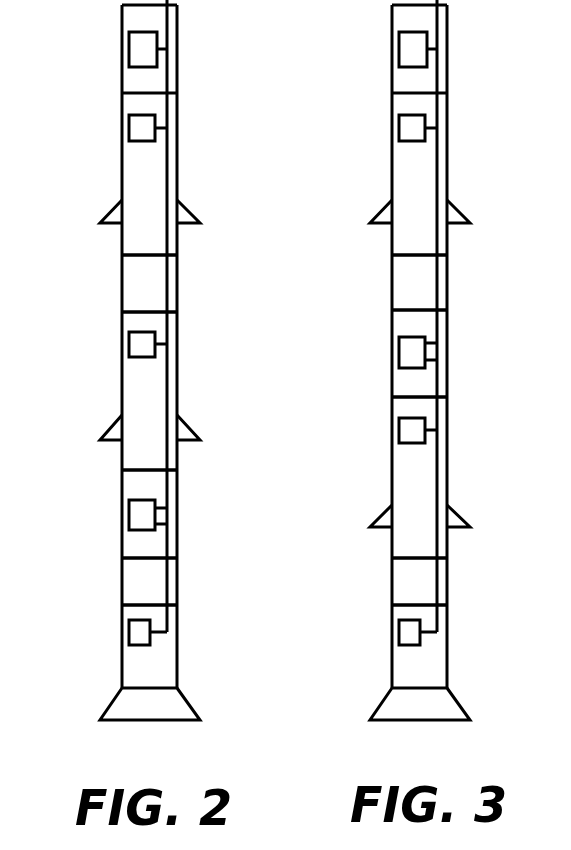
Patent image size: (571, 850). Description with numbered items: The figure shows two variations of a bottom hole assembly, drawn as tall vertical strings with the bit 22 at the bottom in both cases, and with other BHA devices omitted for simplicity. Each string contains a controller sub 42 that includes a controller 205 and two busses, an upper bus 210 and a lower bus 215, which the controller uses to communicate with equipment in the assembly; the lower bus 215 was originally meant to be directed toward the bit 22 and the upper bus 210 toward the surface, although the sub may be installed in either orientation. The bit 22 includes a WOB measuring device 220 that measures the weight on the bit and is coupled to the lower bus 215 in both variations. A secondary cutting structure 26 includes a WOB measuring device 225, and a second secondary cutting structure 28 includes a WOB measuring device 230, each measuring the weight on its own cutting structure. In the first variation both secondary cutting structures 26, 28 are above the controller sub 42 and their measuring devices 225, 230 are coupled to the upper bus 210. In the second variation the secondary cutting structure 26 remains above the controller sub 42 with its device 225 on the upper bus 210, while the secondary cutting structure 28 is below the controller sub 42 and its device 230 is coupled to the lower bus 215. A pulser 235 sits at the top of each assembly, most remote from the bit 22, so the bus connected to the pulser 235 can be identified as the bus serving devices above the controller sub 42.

In FIG. 2, the bit 22 is at (177, 647).
In FIG. 3, the bit 22 is at (447, 647).
In FIG. 2, the secondary cutting structure 26 is at (177, 131).
In FIG. 3, the secondary cutting structure 26 is at (447, 131).
In FIG. 2, the secondary cutting structure 28 is at (177, 349).
In FIG. 3, the secondary cutting structure 28 is at (447, 435).
In FIG. 2, the controller sub 42 is at (177, 514).
In FIG. 3, the controller sub 42 is at (447, 350).
In FIG. 2, the controller 205 is at (129, 512).
In FIG. 3, the controller 205 is at (399, 350).
In FIG. 2, the upper bus 210 is at (170, 232).
In FIG. 3, the upper bus 210 is at (440, 244).
In FIG. 2, the lower bus 215 is at (170, 566).
In FIG. 3, the lower bus 215 is at (440, 468).
In FIG. 2, the WOB measuring device 220 is at (129, 630).
In FIG. 3, the WOB measuring device 220 is at (399, 630).
In FIG. 2, the WOB measuring device 225 is at (129, 125).
In FIG. 3, the WOB measuring device 225 is at (399, 125).
In FIG. 2, the WOB measuring device 230 is at (129, 341).
In FIG. 3, the WOB measuring device 230 is at (399, 428).
In FIG. 2, the pulser 235 is at (129, 46).
In FIG. 3, the pulser 235 is at (399, 46).